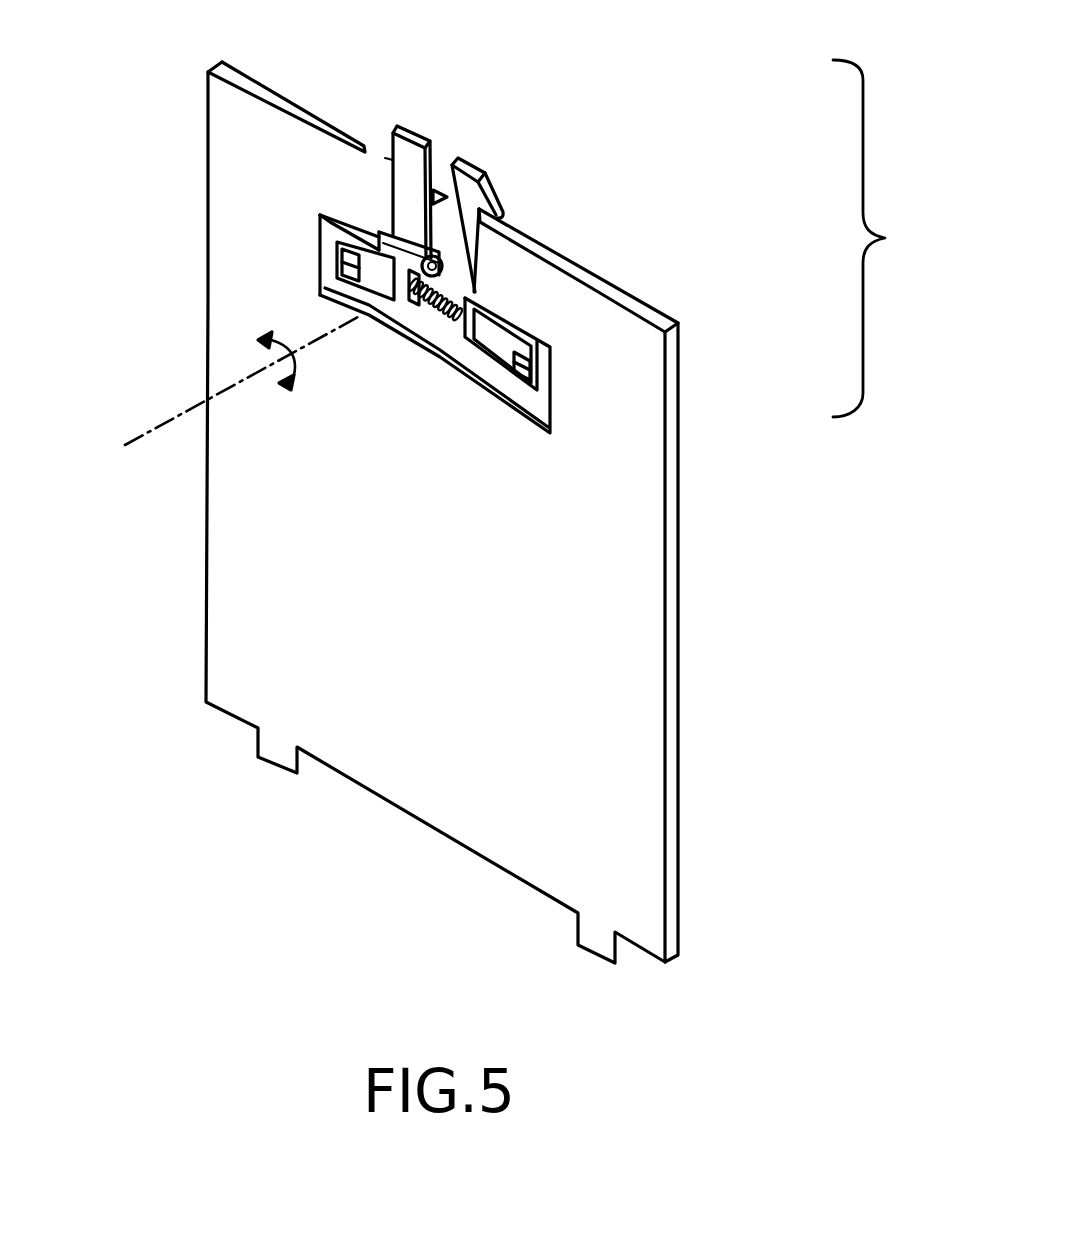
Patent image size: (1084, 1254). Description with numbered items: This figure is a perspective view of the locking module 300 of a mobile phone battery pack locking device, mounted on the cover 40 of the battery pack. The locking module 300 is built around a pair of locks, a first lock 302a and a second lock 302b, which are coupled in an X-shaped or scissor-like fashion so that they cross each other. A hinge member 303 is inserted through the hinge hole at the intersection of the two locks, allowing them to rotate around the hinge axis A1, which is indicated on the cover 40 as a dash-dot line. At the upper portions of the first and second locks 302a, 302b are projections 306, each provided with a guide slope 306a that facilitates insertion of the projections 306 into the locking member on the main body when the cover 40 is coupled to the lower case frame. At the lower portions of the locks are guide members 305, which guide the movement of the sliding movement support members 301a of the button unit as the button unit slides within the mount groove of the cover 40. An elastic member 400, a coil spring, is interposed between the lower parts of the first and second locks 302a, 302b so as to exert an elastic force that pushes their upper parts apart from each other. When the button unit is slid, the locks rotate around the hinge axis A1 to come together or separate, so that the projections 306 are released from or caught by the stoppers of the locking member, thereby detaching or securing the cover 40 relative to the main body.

The cover 40 is at (620, 658).
The locking module 300 is at (503, 274).
The sliding movement support member 301a is at (500, 336).
The first lock 302a is at (410, 193).
The second lock 302b is at (468, 244).
The hinge member 303 is at (490, 290).
The guide member 305 is at (535, 380).
The projection 306 is at (392, 160).
The guide slope 306a is at (500, 220).
The elastic member 400 is at (448, 303).
The hinge axis A1 is at (180, 414).